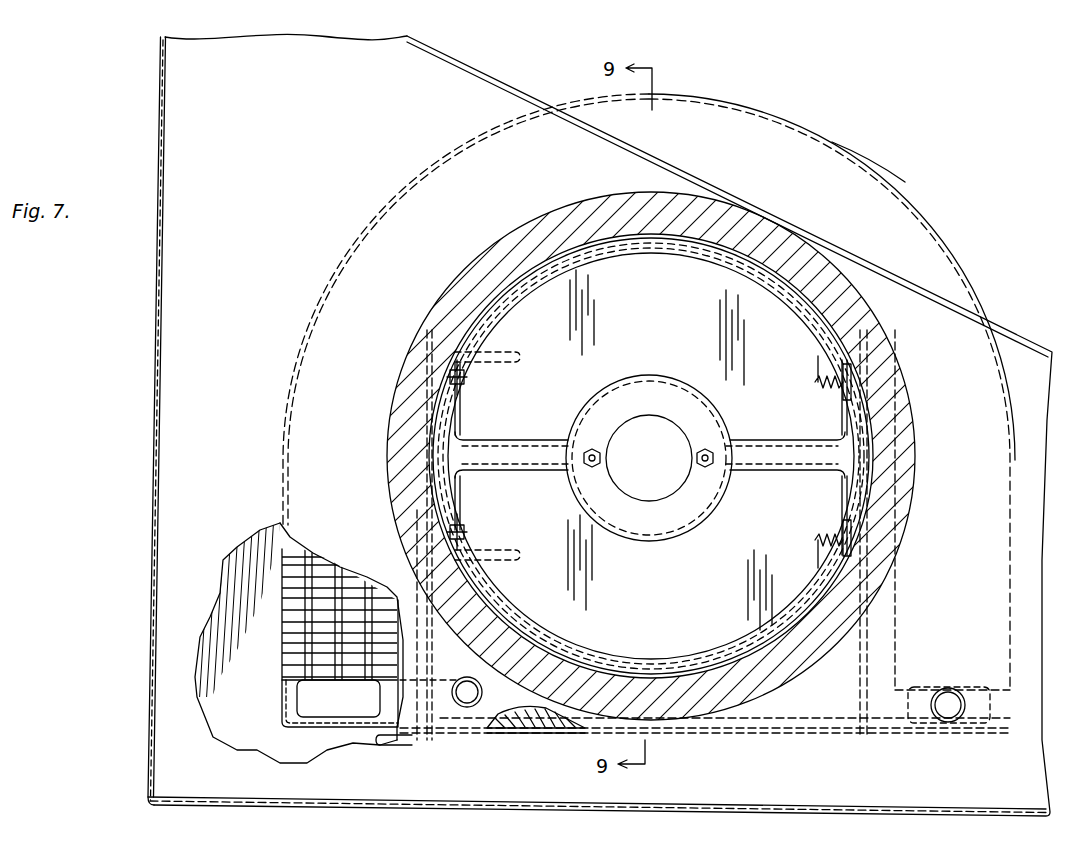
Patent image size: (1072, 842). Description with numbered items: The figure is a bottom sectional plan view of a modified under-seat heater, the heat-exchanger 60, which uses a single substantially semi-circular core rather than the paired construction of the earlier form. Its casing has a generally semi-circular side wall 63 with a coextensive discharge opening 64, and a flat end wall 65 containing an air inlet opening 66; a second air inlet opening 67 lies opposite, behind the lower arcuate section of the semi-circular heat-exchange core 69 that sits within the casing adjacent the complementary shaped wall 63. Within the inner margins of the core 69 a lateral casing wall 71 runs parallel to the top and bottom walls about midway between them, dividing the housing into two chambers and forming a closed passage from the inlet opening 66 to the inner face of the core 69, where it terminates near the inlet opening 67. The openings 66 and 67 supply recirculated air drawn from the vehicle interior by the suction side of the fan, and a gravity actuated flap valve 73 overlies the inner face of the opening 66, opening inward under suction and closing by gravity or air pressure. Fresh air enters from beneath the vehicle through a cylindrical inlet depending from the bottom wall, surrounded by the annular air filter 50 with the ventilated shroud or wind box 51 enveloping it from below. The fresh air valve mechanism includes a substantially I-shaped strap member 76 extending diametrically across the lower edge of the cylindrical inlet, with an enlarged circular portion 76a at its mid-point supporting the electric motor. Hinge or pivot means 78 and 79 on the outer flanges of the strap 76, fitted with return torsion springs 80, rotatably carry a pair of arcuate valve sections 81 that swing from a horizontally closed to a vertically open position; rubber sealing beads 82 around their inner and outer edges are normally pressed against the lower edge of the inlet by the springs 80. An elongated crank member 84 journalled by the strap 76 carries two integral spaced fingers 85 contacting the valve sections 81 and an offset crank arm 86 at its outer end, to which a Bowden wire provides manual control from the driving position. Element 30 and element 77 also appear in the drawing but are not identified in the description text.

The housing panel 30 is at (178, 257).
The ventilated shroud or wind box 51 is at (173, 370).
The under-seat heat-exchanger 60 is at (871, 150).
The semi-circular side wall 63 is at (300, 327).
The discharge opening 64 is at (374, 230).
The flat end wall 65 is at (878, 734).
The air inlet opening 66 is at (452, 733).
The second air inlet opening 67 is at (433, 305).
The annular air filter 50 is at (502, 246).
The heat-exchange core 69 is at (292, 656).
The lateral casing wall 71 is at (765, 718).
The gravity actuated flap valve 73 is at (524, 734).
The I shaped strap member 76 is at (520, 440).
The enlarged circular portion 76a is at (676, 518).
The hub fasteners 77 is at (592, 450).
The hinge or pivot means 78 is at (466, 378).
The hinge or pivot means 79 is at (846, 398).
The return torsion springs 80 is at (816, 382).
The arcuate valve sections 81 is at (684, 320).
The rubber sealing beads 82 is at (462, 416).
The elongated crank member 84 is at (428, 656).
The integral spaced fingers 85 is at (502, 352).
The offset crank arm 86 is at (392, 740).